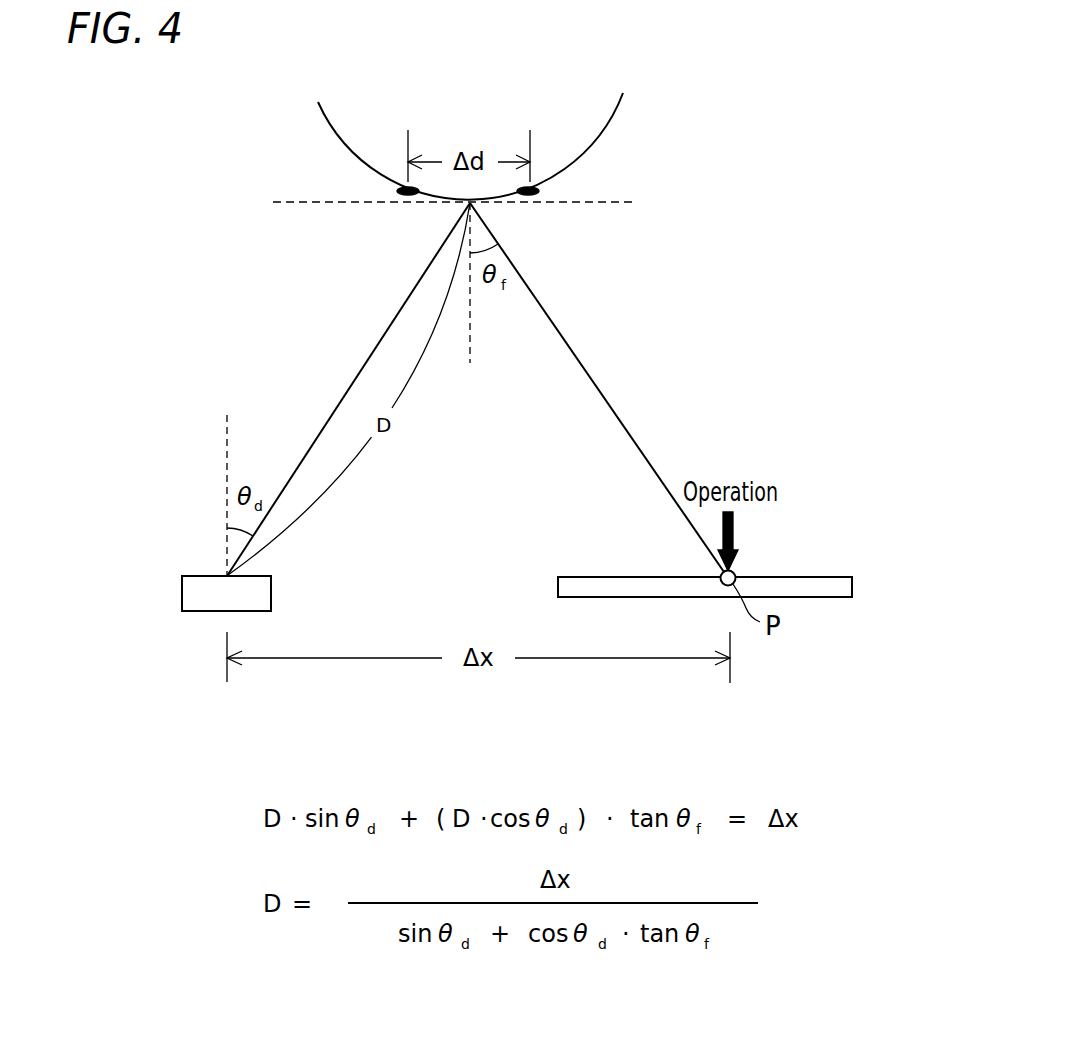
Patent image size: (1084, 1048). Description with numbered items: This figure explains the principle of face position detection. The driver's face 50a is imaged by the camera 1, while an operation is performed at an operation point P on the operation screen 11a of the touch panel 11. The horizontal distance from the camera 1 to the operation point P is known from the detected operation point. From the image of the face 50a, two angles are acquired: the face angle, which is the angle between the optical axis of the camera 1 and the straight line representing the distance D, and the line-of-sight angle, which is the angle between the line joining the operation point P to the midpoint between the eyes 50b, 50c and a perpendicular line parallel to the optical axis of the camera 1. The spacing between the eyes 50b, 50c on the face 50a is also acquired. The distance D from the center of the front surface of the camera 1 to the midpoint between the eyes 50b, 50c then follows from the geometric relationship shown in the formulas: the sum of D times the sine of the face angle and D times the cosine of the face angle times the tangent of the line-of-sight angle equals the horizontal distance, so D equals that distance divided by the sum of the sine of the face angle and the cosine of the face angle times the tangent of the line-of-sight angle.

The camera 1 is at (182, 593).
The touch panel 11 is at (852, 587).
The operation screen 11a is at (810, 577).
The face 50a is at (600, 150).
The eye 50b is at (404, 197).
The eye 50c is at (532, 197).